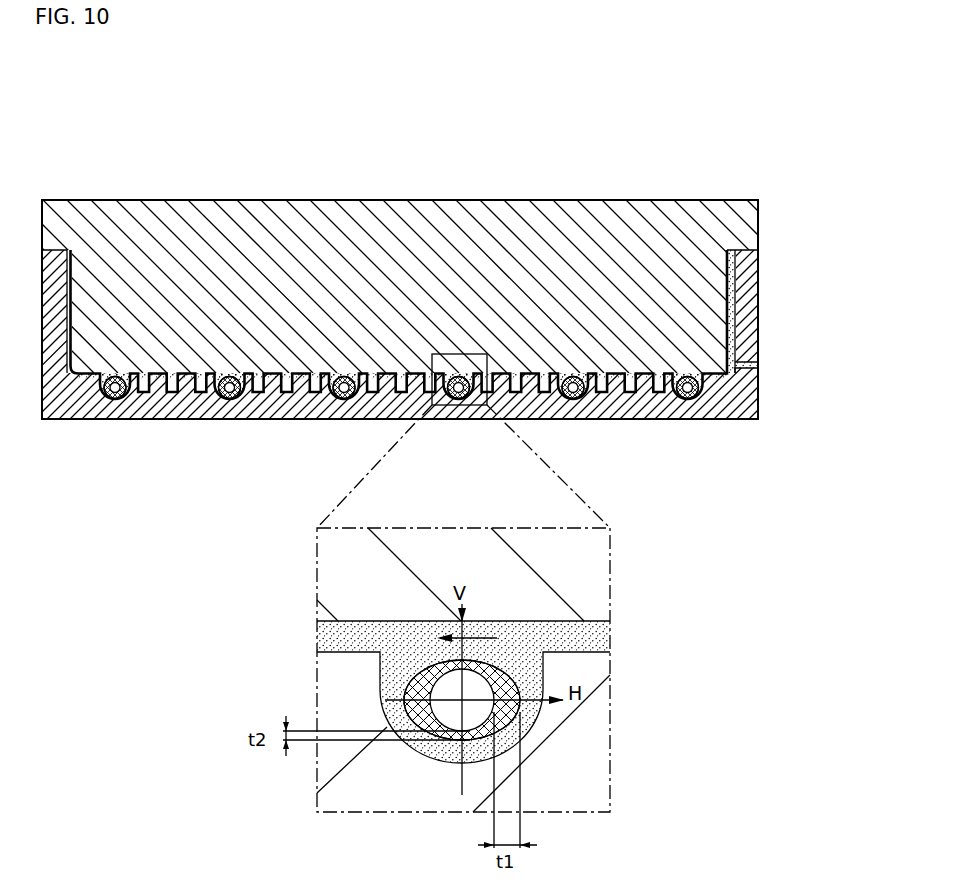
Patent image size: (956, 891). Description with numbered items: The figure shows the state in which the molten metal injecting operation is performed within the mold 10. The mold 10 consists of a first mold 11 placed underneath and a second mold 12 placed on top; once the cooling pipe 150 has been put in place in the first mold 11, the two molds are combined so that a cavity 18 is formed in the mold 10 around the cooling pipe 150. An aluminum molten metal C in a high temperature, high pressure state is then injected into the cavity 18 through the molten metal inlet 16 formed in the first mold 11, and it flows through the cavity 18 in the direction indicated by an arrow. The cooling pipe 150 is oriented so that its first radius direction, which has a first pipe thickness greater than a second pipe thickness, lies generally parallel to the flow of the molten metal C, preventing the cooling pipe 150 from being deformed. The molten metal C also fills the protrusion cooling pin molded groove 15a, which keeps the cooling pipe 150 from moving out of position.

The mold 10 is at (648, 170).
The first mold 11 is at (70, 408).
The second mold 12 is at (170, 216).
The protrusion cooling pin molded groove 15a is at (500, 367).
The molten metal inlet 16 is at (745, 410).
The cavity 18 is at (240, 397).
The molten metal C is at (650, 408).
The cooling pipe 150 is at (513, 723).